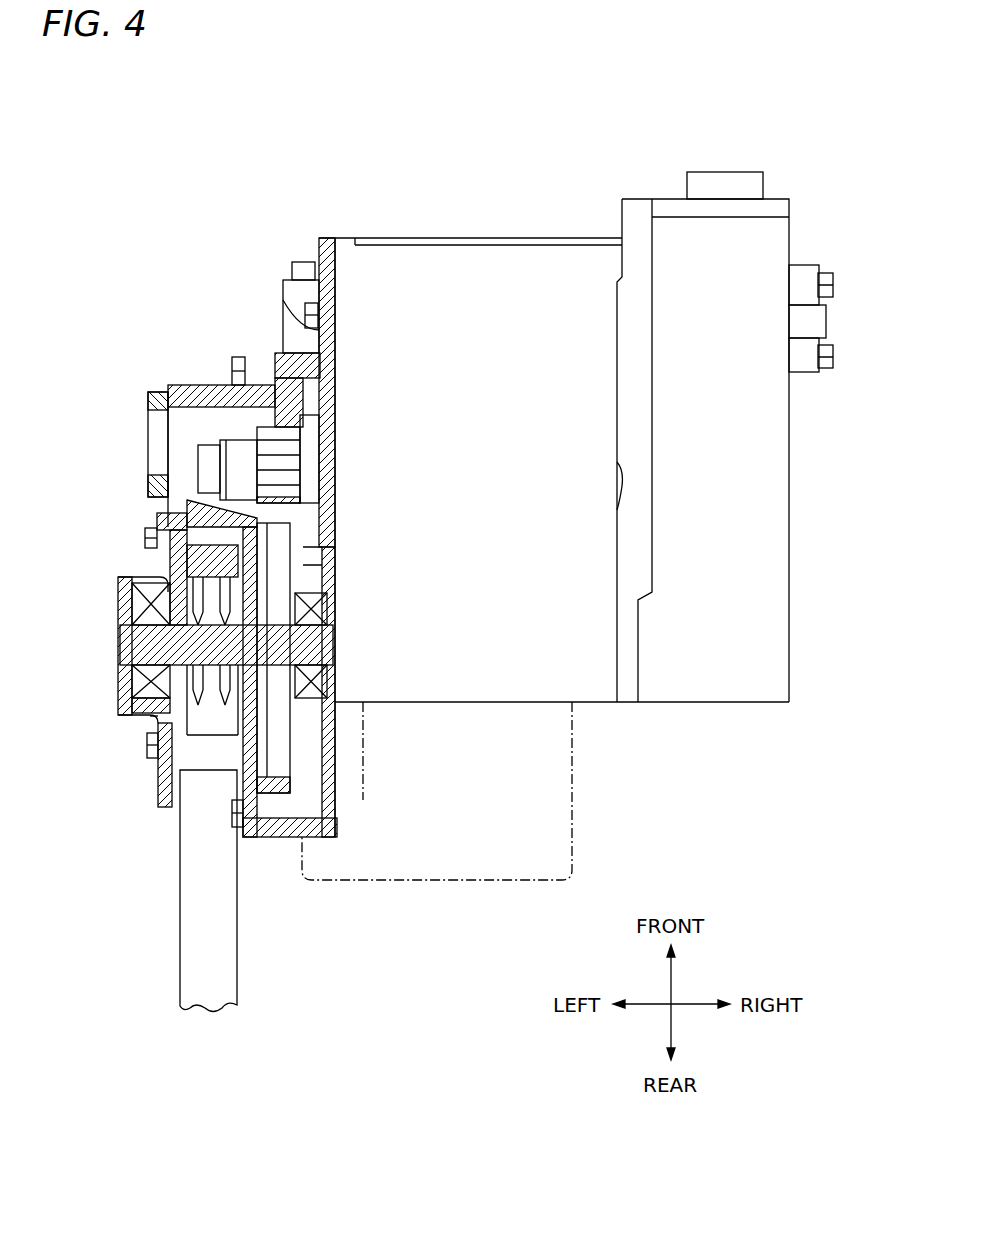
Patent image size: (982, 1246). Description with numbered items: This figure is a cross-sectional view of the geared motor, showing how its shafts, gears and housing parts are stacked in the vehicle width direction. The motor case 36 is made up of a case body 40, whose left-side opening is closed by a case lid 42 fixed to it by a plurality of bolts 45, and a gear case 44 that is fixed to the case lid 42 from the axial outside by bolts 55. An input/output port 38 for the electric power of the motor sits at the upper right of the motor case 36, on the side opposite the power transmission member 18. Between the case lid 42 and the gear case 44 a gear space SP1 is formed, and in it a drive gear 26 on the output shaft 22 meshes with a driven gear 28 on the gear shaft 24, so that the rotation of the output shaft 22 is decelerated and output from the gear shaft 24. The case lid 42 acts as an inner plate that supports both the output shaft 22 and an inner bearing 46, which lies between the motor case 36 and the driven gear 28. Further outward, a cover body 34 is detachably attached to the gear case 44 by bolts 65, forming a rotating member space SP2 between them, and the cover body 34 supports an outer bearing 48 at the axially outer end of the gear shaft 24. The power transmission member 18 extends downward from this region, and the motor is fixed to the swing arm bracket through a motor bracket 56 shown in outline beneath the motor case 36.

The power transmission member 18 is at (238, 936).
The output shaft 22 is at (205, 470).
The gear shaft 24 is at (140, 637).
The drive gear 26 is at (305, 432).
The driven gear 28 is at (290, 745).
The cover body 34 is at (120, 708).
The motor case 36 is at (425, 170).
The input/output port 38 is at (736, 172).
The case body 40 is at (398, 240).
The case lid 42 is at (321, 240).
The gear case 44 is at (185, 385).
The bolts 45 is at (292, 286).
The inner bearing 46 is at (330, 690).
The outer bearing 48 is at (148, 575).
The bolts 55 is at (240, 360).
The motor bracket 56 is at (578, 860).
The bolts 65 is at (148, 530).
The gear space SP1 is at (275, 770).
The rotating member space SP2 is at (150, 716).